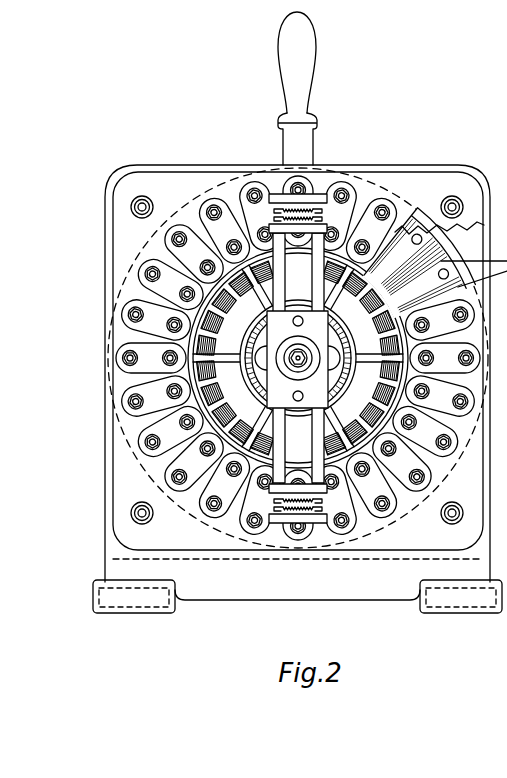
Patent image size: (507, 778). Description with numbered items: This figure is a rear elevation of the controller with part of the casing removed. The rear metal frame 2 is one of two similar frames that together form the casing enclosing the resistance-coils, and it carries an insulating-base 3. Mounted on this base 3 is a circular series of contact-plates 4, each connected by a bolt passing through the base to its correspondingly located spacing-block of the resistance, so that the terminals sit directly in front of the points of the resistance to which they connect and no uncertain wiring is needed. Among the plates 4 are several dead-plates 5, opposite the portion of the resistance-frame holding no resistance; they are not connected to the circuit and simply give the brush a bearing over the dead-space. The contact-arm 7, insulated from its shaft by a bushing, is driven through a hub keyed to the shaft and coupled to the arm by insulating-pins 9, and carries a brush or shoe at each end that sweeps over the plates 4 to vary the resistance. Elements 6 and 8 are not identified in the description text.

The metal frame 2 is at (297, 586).
The insulating-base 3 is at (297, 373).
The contact-plates 4 is at (133, 398).
The dead-plates 5 is at (298, 365).
The bearing plate 6 is at (297, 359).
The contact-arm 7 is at (298, 358).
The springs 8 is at (298, 359).
The insulating-pins 9 is at (304, 394).